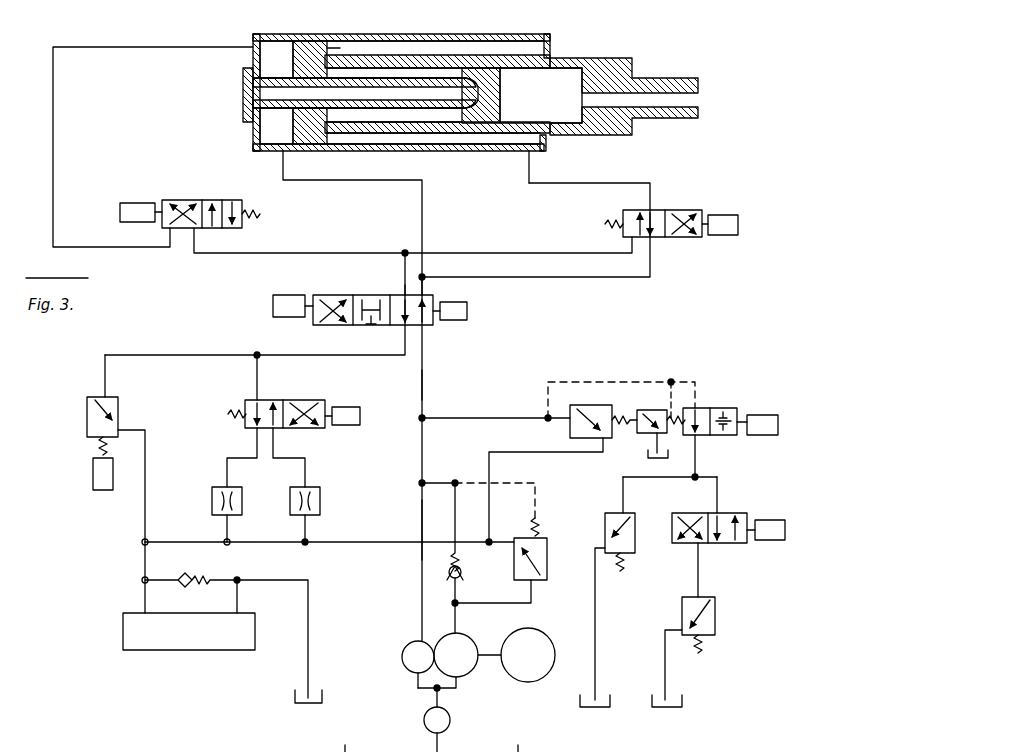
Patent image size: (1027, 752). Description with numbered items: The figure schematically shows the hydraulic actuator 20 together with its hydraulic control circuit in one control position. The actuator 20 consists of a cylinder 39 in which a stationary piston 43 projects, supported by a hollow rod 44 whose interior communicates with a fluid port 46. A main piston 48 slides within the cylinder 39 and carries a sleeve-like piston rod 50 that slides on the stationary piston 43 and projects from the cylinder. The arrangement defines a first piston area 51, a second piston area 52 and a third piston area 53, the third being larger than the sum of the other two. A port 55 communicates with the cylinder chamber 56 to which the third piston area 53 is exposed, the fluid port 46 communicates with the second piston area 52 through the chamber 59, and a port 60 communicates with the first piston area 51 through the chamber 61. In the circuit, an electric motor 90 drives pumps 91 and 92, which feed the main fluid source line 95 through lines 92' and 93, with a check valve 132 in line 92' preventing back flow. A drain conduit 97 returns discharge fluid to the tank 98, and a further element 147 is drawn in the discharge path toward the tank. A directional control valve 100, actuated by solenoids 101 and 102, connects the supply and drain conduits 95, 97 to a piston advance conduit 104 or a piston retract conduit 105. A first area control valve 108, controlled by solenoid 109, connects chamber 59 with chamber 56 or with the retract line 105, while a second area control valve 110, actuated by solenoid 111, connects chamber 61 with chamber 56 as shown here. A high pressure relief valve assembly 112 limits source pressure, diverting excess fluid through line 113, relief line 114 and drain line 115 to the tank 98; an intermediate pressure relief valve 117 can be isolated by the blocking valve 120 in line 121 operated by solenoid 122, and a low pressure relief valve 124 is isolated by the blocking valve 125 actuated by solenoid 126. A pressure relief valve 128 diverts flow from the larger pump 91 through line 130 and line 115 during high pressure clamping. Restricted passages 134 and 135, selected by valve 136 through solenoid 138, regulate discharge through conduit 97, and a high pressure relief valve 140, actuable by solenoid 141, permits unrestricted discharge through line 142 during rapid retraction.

The hydraulic actuator 20 is at (540, 30).
The cylinder 39 is at (410, 41).
The stationary piston 43 is at (500, 85).
The hollow rod 44 is at (415, 108).
The fluid port 46 is at (243, 85).
The main piston 48 is at (310, 48).
The piston rod 50 is at (566, 58).
The first piston area 51 is at (330, 144).
The second piston area 52 is at (345, 56).
The third piston area 53 is at (276, 126).
The port 55 is at (253, 42).
The cylinder chamber 56 is at (275, 41).
The chamber 59 is at (372, 108).
The port 60 is at (538, 151).
The chamber 61 is at (465, 24).
The electric motor 90 is at (528, 682).
The pump 91 is at (466, 646).
The pump 92 is at (405, 654).
The line 92' is at (440, 481).
The line 93 is at (420, 526).
The main fluid source line 95 is at (424, 386).
The drain conduit 97 is at (362, 355).
The tank 98 is at (295, 698).
The directional control valve 100 is at (350, 295).
The solenoid 101 is at (273, 306).
The solenoid 102 is at (468, 313).
The piston advance conduit 104 is at (426, 279).
The piston retract conduit 105 is at (405, 284).
The first area control valve 108 is at (195, 202).
The solenoid 109 is at (140, 203).
The second area control valve 110 is at (670, 212).
The solenoid 111 is at (728, 215).
The high pressure relief valve assembly 112 is at (615, 397).
The line 113 is at (510, 418).
The relief line 114 is at (527, 452).
The drain line 115 is at (312, 545).
The intermediate pressure relief valve 117 is at (634, 574).
The blocking valve 120 is at (712, 408).
The line 121 is at (674, 405).
The solenoid 122 is at (765, 415).
The low pressure relief valve 124 is at (715, 616).
The blocking valve 125 is at (727, 513).
The solenoid 126 is at (770, 520).
The pressure relief valve 128 is at (540, 552).
The line 130 is at (531, 590).
The check valve 132 is at (458, 578).
The restricted passage 134 is at (212, 500).
The restricted passage 135 is at (320, 500).
The valve 136 is at (310, 400).
The solenoid 138 is at (360, 416).
The high pressure relief valve 140 is at (87, 405).
The solenoid 141 is at (93, 480).
The line 142 is at (143, 355).
The reservoir 147 is at (123, 636).